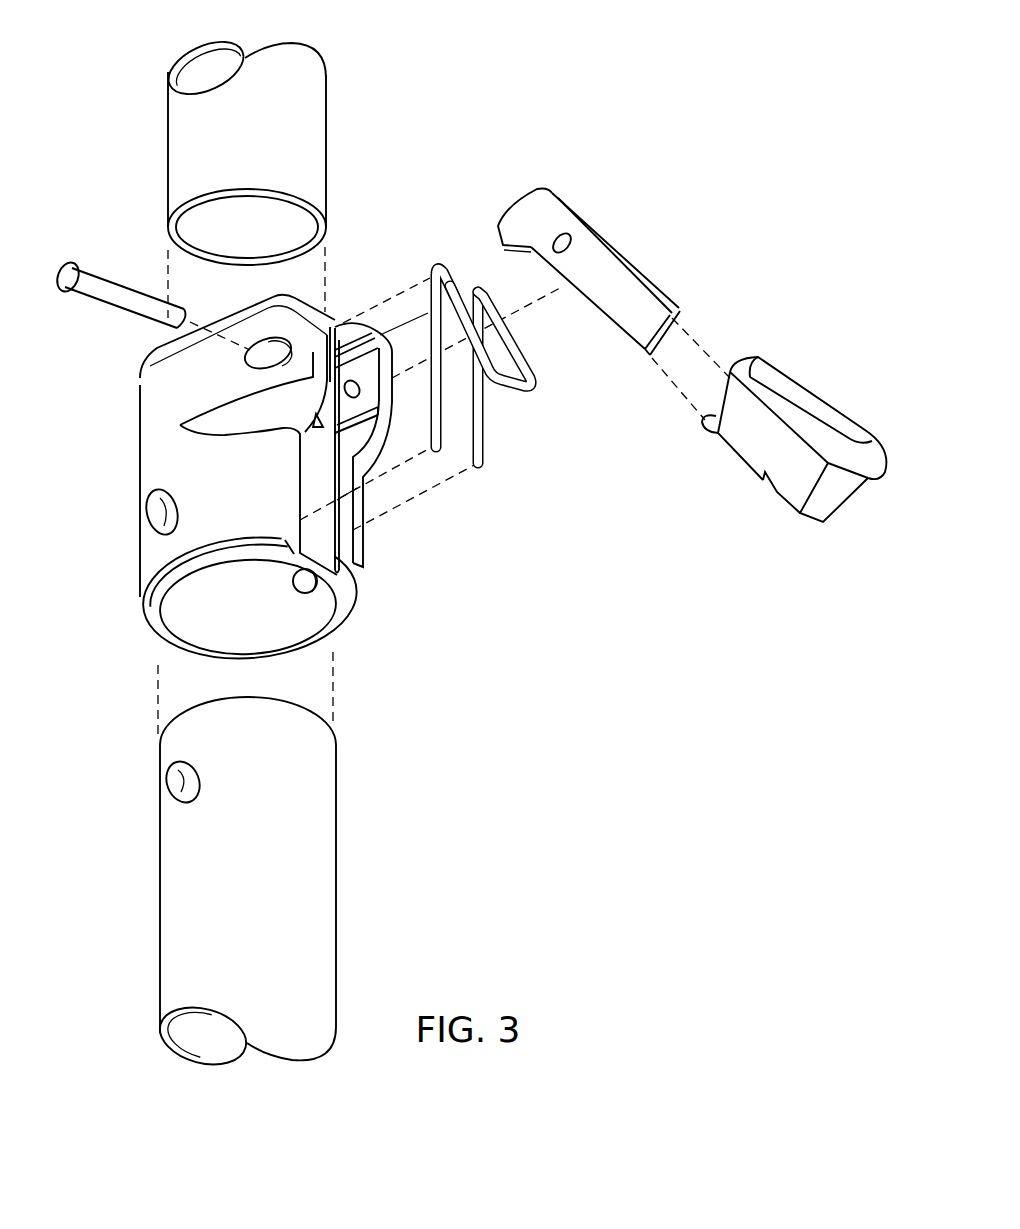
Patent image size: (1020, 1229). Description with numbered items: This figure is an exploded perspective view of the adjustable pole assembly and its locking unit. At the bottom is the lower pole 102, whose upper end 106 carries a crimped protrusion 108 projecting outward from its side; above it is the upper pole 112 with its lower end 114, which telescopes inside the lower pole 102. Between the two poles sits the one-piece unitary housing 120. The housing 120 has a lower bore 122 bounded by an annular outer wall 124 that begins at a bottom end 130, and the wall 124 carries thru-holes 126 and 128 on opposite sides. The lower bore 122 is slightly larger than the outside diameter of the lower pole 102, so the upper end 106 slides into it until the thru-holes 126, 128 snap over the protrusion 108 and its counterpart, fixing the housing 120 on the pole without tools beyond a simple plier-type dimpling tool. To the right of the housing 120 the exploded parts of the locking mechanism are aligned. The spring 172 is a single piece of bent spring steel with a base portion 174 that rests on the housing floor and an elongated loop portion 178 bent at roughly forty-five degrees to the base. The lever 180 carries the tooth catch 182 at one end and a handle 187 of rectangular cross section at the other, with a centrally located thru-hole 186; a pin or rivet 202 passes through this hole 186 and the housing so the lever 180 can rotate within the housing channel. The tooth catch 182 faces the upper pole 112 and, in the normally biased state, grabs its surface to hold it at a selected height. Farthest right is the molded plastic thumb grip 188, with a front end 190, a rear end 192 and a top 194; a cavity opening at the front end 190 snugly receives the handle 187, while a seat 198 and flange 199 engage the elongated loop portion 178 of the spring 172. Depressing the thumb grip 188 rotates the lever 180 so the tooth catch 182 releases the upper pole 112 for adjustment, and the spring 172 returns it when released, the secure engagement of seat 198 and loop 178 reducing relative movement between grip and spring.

The lower pole 102 is at (247, 885).
The upper end 106 is at (322, 758).
The protrusion 108 is at (175, 777).
The upper pole 112 is at (219, 174).
The lower end 114 is at (178, 191).
The housing 120 is at (317, 506).
The lower bore 122 is at (197, 624).
The annular outer wall 124 is at (322, 640).
The thru-hole 126 is at (155, 516).
The thru-hole 128 is at (316, 586).
The bottom end 130 is at (145, 590).
The spring 172 is at (509, 389).
The base portion 174 is at (474, 442).
The elongated loop portion 178 is at (508, 374).
The lever 180 is at (582, 297).
The tooth catch 182 is at (497, 230).
The thru-hole 186 is at (561, 232).
The handle 187 is at (655, 291).
The thumb grip 188 is at (785, 429).
The front end 190 is at (714, 428).
The rear end 192 is at (830, 503).
The top 194 is at (820, 406).
The seat 198 is at (740, 466).
The flange 199 is at (766, 494).
The pin or rivet 202 is at (79, 297).